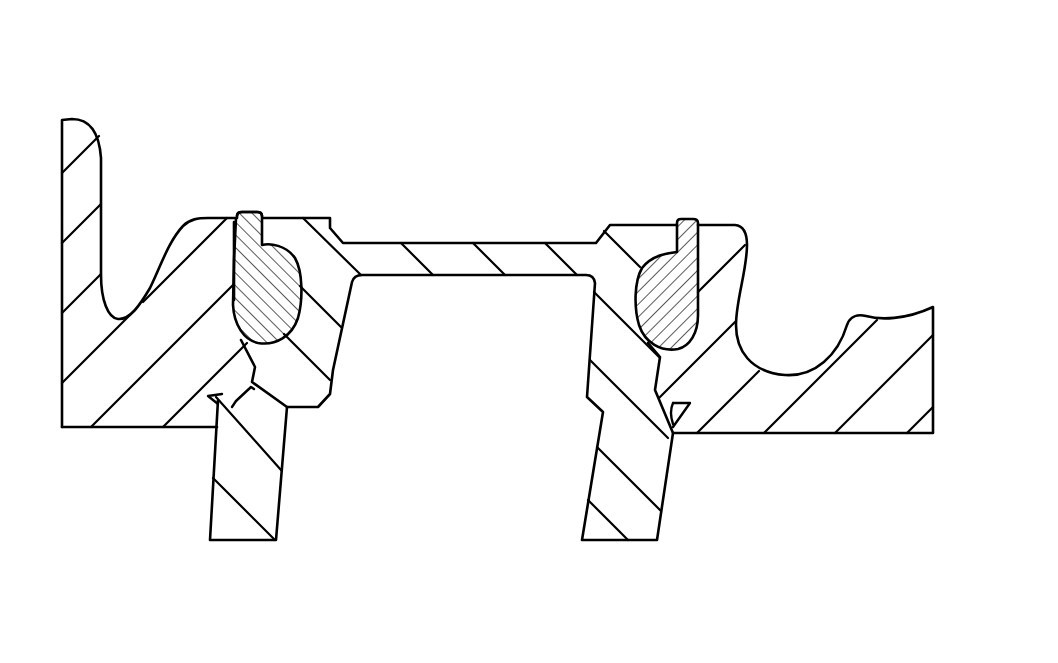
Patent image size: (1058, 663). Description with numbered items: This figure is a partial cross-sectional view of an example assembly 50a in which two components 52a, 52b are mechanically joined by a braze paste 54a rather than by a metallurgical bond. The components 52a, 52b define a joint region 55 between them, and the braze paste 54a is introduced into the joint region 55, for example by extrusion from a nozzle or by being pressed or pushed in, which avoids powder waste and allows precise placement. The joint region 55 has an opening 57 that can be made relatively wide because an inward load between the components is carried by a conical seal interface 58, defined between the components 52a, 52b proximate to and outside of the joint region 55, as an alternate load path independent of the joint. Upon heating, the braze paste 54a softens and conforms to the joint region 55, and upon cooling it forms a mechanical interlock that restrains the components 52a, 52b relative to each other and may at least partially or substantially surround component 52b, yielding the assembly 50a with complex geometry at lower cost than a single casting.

The assembly 50a is at (94, 45).
The component 52a is at (98, 136).
The component 52b is at (455, 243).
The braze paste 54a is at (272, 270).
The joint region 55 is at (231, 248).
The opening 57 is at (263, 205).
The conical seal interface 58 is at (234, 402).